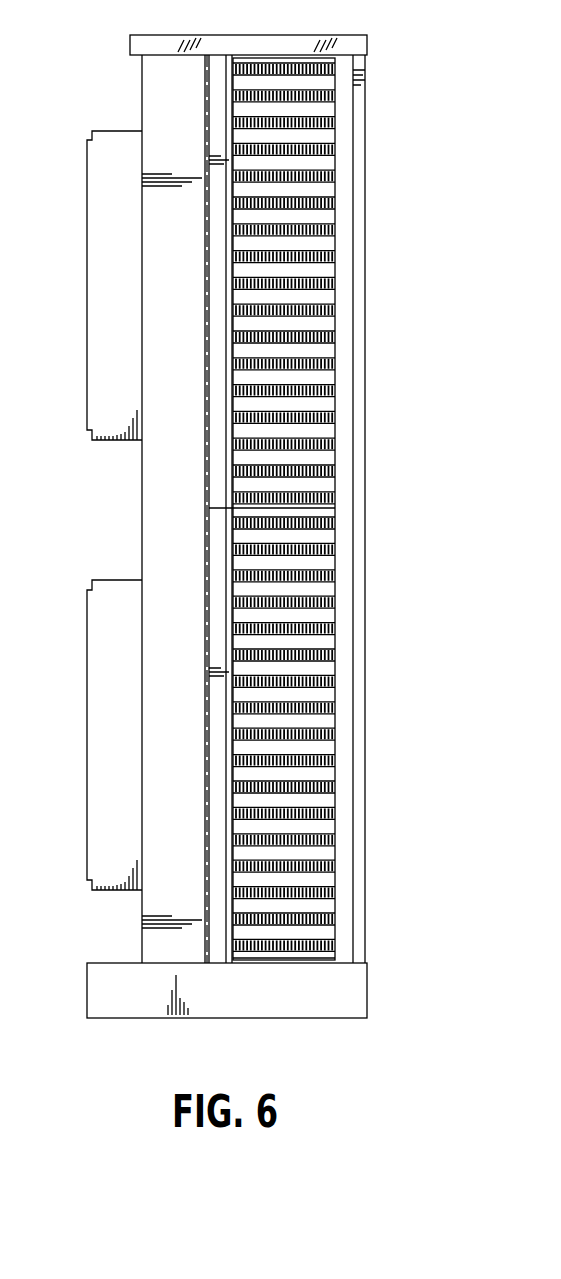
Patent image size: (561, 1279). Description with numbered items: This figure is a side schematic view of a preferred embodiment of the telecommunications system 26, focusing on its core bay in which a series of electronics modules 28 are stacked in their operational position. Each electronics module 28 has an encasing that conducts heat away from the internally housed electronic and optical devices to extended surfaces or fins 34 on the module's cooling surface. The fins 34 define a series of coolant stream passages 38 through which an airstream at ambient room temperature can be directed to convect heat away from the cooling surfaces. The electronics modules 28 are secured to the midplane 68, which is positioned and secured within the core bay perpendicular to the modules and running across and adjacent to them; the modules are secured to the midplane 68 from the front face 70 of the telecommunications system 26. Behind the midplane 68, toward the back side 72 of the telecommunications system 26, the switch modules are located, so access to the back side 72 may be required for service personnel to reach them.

The telecommunications system 26 is at (380, 938).
The electronics module 28 is at (338, 218).
The fins 34 is at (322, 598).
The coolant stream passage 38 is at (247, 710).
The midplane 68 is at (257, 955).
The front face 70 is at (365, 858).
The back side 72 is at (103, 310).